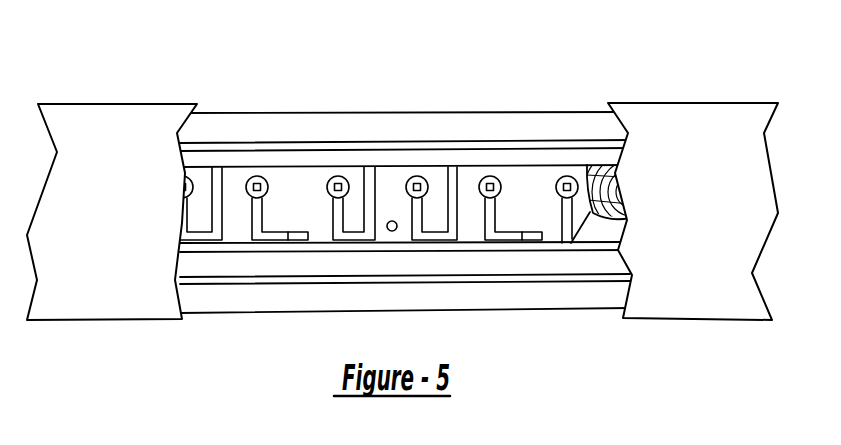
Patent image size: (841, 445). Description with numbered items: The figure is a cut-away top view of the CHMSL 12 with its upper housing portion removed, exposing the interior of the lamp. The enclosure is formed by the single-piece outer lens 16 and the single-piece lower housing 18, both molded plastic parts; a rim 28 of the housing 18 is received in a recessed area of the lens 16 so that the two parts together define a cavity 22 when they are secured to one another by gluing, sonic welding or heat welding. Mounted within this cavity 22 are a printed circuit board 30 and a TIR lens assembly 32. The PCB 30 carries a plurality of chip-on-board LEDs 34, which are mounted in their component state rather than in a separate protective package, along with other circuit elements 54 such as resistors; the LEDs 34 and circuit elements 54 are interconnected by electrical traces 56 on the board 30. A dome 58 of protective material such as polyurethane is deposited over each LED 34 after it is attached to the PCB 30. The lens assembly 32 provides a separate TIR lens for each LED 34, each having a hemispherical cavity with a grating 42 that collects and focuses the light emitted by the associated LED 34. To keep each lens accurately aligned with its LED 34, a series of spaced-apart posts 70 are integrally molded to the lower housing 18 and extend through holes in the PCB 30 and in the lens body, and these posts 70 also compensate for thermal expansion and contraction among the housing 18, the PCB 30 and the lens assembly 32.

The CHMSL 12 is at (443, 72).
The outer lens 16 is at (112, 128).
The housing 18 is at (567, 122).
The cavity 22 is at (240, 262).
The rim 28 is at (283, 148).
The printed circuit board 30 is at (337, 176).
The TIR lens assembly 32 is at (594, 233).
The LEDs 34 is at (330, 183).
The grating 42 is at (620, 190).
The circuit elements 54 is at (305, 242).
The electrical traces 56 is at (458, 183).
The dome 58 is at (253, 176).
The posts 70 is at (393, 231).